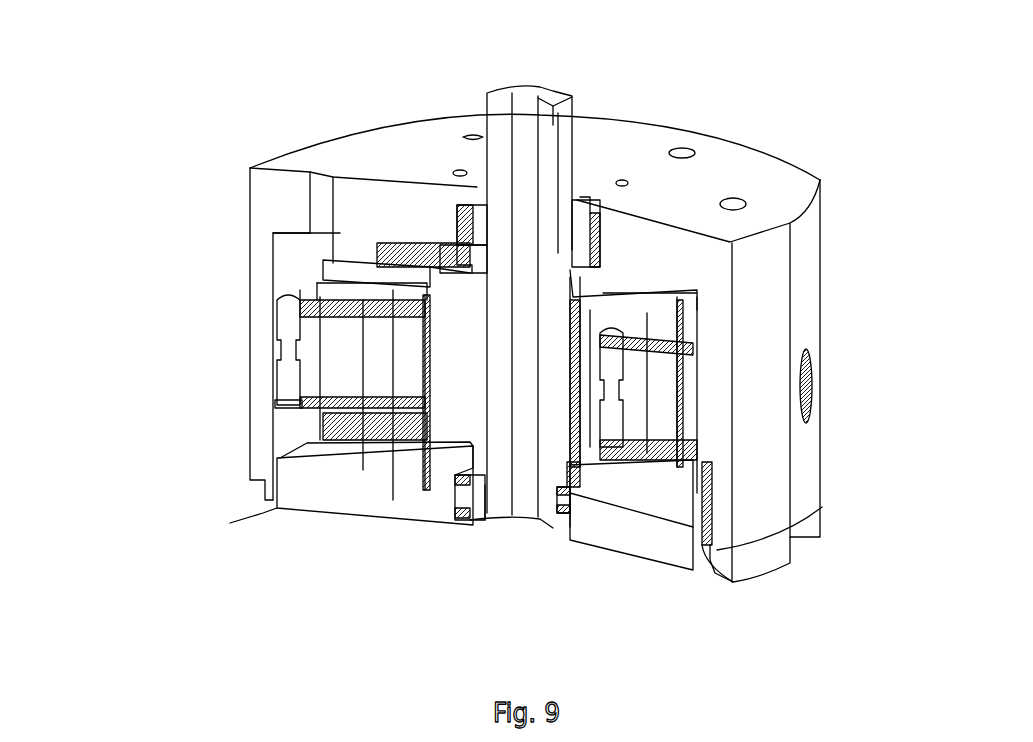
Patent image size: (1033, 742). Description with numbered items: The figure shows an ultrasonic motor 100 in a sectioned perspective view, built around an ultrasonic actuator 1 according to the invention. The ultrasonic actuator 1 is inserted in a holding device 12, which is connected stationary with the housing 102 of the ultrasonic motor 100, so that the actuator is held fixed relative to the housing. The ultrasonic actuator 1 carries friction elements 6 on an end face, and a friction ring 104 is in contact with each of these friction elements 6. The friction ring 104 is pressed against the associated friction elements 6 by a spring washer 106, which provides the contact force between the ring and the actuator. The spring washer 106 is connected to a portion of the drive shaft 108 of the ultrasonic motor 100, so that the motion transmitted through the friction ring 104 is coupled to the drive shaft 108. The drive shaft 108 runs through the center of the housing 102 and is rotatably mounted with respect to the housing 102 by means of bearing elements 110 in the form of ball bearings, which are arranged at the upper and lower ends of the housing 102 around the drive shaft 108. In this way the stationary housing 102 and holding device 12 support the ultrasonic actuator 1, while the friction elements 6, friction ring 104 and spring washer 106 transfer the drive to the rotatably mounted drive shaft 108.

The ultrasonic motor 100 is at (220, 120).
The housing 102 is at (733, 160).
The drive shaft 108 is at (553, 92).
The bearing elements 110 is at (473, 228).
The spring washer 106 is at (360, 253).
The friction ring 104 is at (343, 423).
The friction elements 6 is at (385, 300).
The holding device 12 is at (266, 348).
The ultrasonic actuator 1 is at (660, 402).